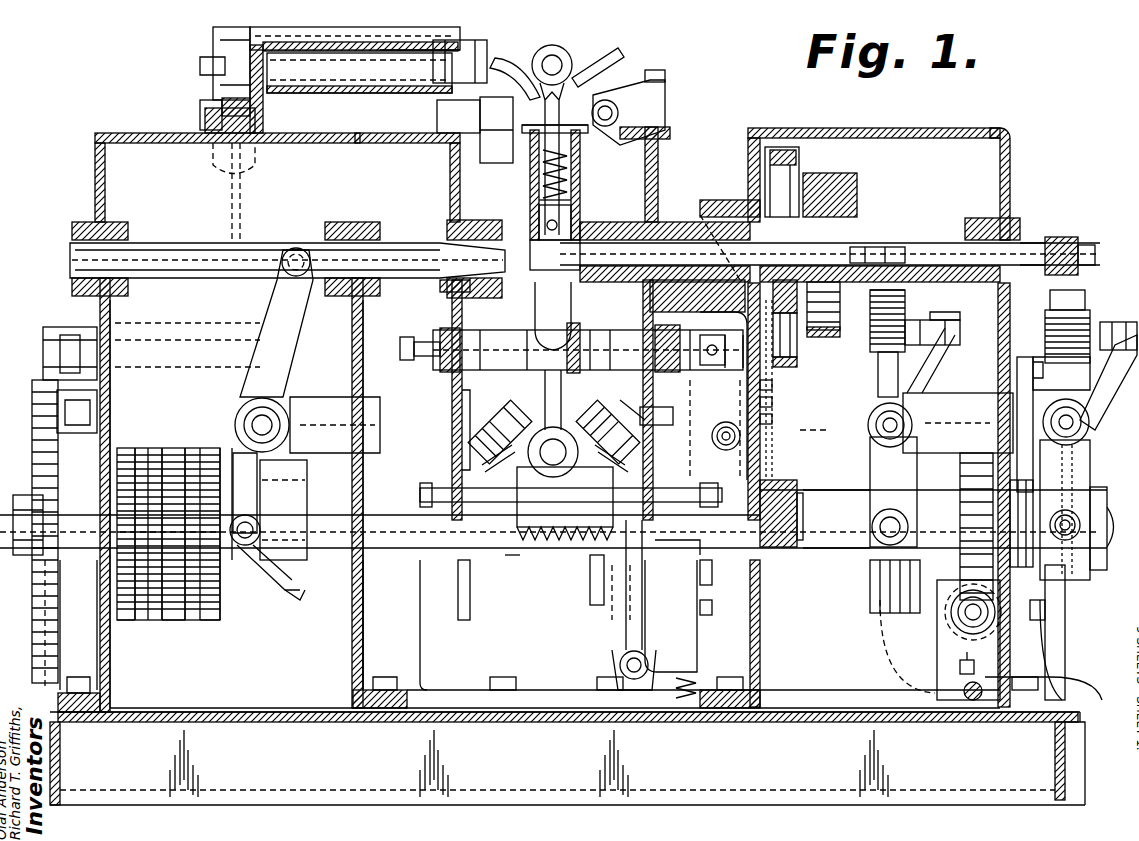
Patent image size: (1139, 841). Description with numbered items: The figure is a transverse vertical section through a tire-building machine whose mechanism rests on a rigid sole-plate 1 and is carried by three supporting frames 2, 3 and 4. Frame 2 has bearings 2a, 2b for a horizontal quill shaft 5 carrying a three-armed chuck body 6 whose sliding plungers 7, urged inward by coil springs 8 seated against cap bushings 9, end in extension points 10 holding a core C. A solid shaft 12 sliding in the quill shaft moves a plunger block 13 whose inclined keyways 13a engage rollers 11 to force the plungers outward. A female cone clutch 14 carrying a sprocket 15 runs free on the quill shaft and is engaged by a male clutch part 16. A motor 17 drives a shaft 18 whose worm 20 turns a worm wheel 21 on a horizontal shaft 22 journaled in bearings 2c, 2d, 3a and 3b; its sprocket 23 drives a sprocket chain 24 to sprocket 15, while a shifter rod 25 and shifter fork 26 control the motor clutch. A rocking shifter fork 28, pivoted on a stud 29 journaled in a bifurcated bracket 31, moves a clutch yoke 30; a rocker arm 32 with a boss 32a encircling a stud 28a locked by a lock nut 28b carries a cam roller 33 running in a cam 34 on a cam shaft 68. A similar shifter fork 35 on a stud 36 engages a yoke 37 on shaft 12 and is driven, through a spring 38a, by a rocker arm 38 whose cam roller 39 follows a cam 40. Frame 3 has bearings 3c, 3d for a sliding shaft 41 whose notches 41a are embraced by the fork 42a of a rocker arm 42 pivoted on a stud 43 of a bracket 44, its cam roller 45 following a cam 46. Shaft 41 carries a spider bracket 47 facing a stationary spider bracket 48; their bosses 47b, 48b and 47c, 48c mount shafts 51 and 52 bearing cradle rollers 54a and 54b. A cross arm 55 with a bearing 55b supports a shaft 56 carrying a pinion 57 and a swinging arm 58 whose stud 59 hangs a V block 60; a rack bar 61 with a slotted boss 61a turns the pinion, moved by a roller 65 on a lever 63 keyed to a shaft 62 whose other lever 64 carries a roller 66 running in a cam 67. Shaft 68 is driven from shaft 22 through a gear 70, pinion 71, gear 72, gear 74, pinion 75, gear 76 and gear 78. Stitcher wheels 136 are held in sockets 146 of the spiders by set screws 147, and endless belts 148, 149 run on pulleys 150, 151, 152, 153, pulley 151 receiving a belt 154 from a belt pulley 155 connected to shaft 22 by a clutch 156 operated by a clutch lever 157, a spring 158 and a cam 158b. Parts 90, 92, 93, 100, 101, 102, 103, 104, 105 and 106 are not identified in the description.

The base 1 is at (60, 750).
The gear casing 2 is at (1010, 140).
The casing bearing 2a is at (985, 220).
The casing flange 2b is at (722, 200).
The casing wall 2c is at (1035, 470).
The casing partition 2d is at (760, 585).
The housing 3 is at (100, 665).
The housing wall 3a is at (363, 582).
The housing bracket 3b is at (97, 600).
The housing bearing 3c is at (413, 242).
The housing bearing 3d is at (112, 225).
The main shaft 4 is at (420, 615).
The drive shaft 5 is at (928, 243).
The casing top wall 6 is at (620, 224).
The plunger guide 7 is at (572, 190).
The spring 8 is at (572, 168).
The guide cap 9 is at (572, 133).
The plunger rod 10 is at (565, 80).
The guide cylinder 11 is at (530, 210).
The shaft end 12 is at (1015, 240).
The pin 13 is at (539, 245).
The cam block 13a is at (585, 235).
The bearing 14 is at (822, 180).
The casing wall 15 is at (748, 155).
The bearing bushing 16 is at (857, 190).
The bracket 17 is at (1065, 648).
The bearing 18 is at (955, 620).
The bearing housing 20 is at (960, 636).
The gear 21 is at (965, 465).
The collar 22 is at (805, 480).
The collar 23 is at (805, 490).
The shaft 24 is at (835, 486).
The pipe 25 is at (968, 705).
The valve 26 is at (960, 675).
The threaded rod 28 is at (905, 300).
The nut 28a is at (958, 332).
The threaded portion 28b is at (900, 325).
The pivot 29 is at (870, 425).
The key 30 is at (900, 243).
The lever bar 31 is at (975, 395).
The link 32 is at (945, 370).
The lock nut 32a is at (958, 318).
The link 33 is at (870, 562).
The hub 34 is at (870, 588).
The threaded rod 35 is at (1078, 300).
The pivot 36 is at (1090, 421).
The nut 37 is at (1062, 237).
The lever 38 is at (1100, 375).
The lever nut 38a is at (1105, 322).
The link 39 is at (1085, 500).
The stop 40 is at (1060, 620).
The rock shaft 41 is at (202, 245).
The crank pin 41a is at (298, 250).
The lever 42 is at (288, 337).
The lever arm 42a is at (300, 250).
The link 43 is at (282, 415).
The arm 44 is at (312, 400).
The lever 45 is at (243, 585).
The link 46 is at (288, 600).
The bearing wall 47 is at (452, 195).
The bearing 47b is at (466, 560).
The shaft 47c is at (472, 332).
The wall 48 is at (645, 160).
The bearing 48b is at (658, 555).
The bearing 48c is at (620, 410).
The shaft 51 is at (420, 494).
The bearing 52 is at (455, 430).
The gear 54a is at (560, 560).
The crank 54b is at (553, 427).
The shaft 55 is at (330, 52).
The shaft bracket 55b is at (430, 48).
The bracket 56 is at (437, 108).
The bracket 57 is at (225, 45).
The nut 58 is at (458, 50).
The cam 59 is at (505, 68).
The block 60 is at (495, 130).
The bolt 61 is at (225, 102).
The bolt head 61a is at (213, 90).
The pulley 62 is at (45, 345).
The link 63 is at (242, 188).
The hub 64 is at (60, 362).
The bracket 65 is at (200, 128).
The collar 66 is at (33, 408).
The bolt 67 is at (45, 437).
The shaft 68 is at (30, 500).
The clutch disc 70 is at (125, 448).
The clutch disc 71 is at (140, 620).
The clutch disc 72 is at (148, 448).
The clutch disc 74 is at (180, 448).
The clutch disc 75 is at (172, 620).
The clutch disc 76 is at (195, 448).
The clutch disc 78 is at (208, 620).
The bearing block 90 is at (700, 405).
The bearing 92 is at (822, 345).
The bearing 93 is at (665, 330).
The collar 100 is at (718, 335).
The passage 101 is at (698, 215).
The ring 102 is at (777, 384).
The ring 103 is at (777, 401).
The ring 104 is at (770, 445).
The bracket 105 is at (725, 578).
The bracket 106 is at (718, 603).
The lever 136 is at (615, 62).
The bracket 146 is at (665, 100).
The screw 147 is at (660, 72).
The bearing 148 is at (500, 340).
The sleeve 149 is at (585, 332).
The bevel gear 150 is at (505, 405).
The bevel gear 151 is at (600, 408).
The shaft 152 is at (482, 466).
The shaft 153 is at (628, 468).
The bearing 154 is at (612, 338).
The rod 155 is at (612, 565).
The bracket 156 is at (650, 570).
The lever 157 is at (626, 620).
The spring 158 is at (685, 676).
The rod 158b is at (612, 590).
The ring C is at (538, 55).